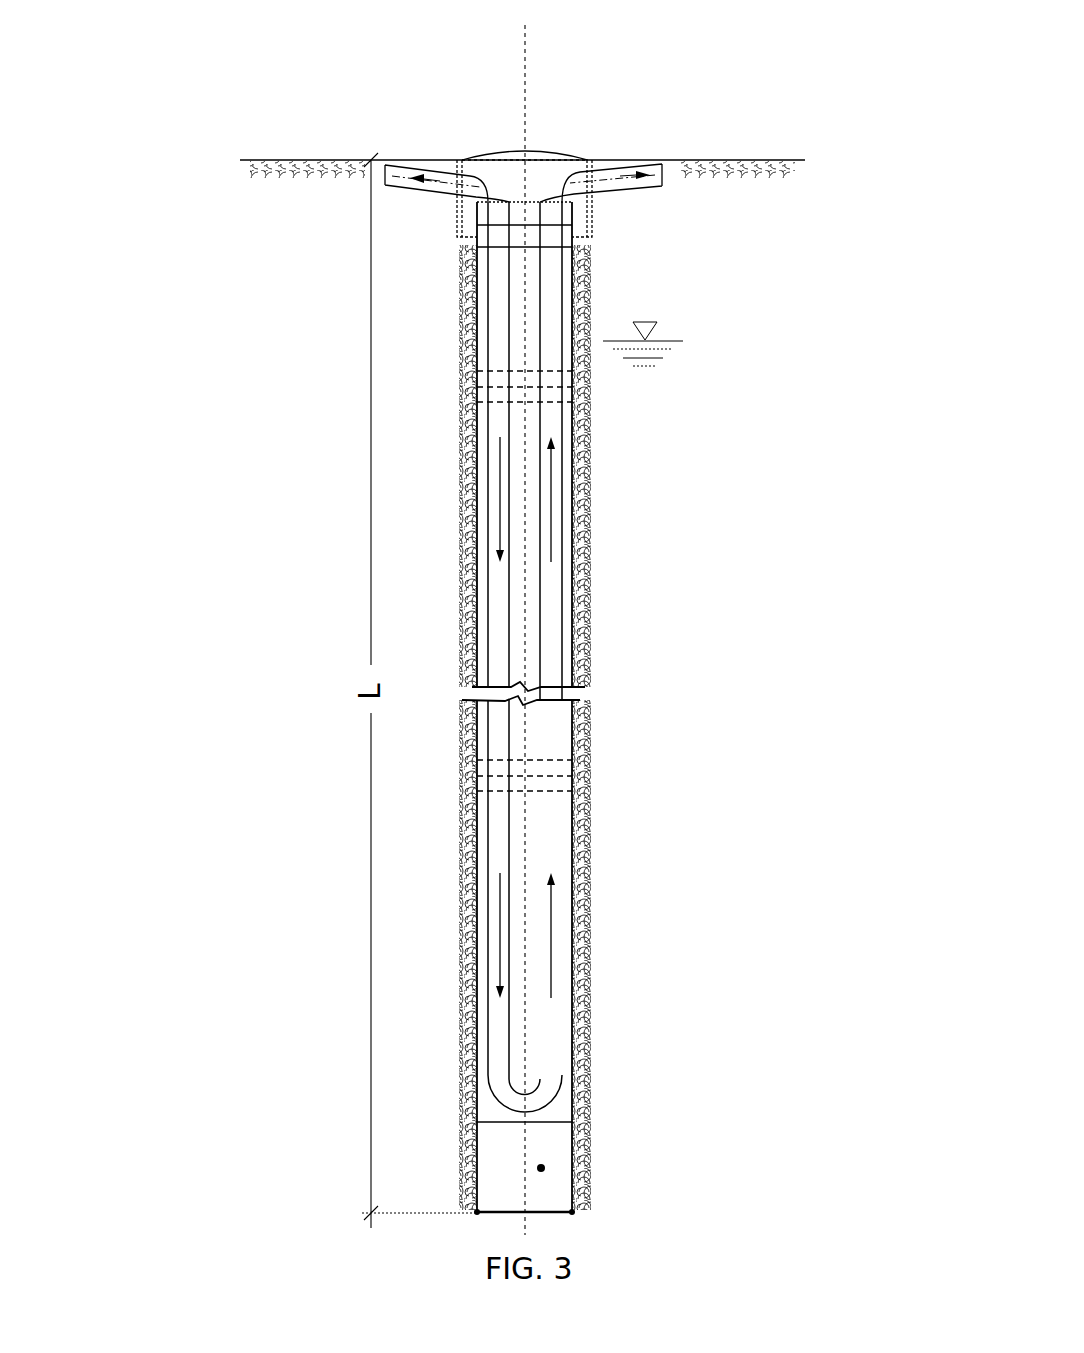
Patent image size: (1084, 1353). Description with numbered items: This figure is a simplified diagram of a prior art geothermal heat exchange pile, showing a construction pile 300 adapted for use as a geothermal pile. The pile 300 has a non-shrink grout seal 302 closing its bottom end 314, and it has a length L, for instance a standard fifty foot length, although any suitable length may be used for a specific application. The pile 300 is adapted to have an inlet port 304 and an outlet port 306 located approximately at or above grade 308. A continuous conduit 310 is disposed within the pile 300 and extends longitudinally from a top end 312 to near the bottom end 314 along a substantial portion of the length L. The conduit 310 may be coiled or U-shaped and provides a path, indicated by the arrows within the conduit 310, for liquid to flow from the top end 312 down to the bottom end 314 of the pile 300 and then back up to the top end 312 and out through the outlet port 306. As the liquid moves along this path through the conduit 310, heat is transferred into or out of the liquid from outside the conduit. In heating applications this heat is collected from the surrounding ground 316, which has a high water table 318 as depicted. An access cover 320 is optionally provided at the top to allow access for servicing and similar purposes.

The construction pile 300 is at (645, 708).
The non-shrink grout seal 302 is at (545, 1165).
The inlet port 304 is at (402, 189).
The outlet port 306 is at (634, 193).
The grade 308 is at (655, 158).
The continuous conduit 310 is at (552, 606).
The top end 312 is at (398, 241).
The bottom end 314 is at (426, 1086).
The surrounding ground 316 is at (577, 504).
The water table 318 is at (666, 335).
The access cover 320 is at (518, 148).